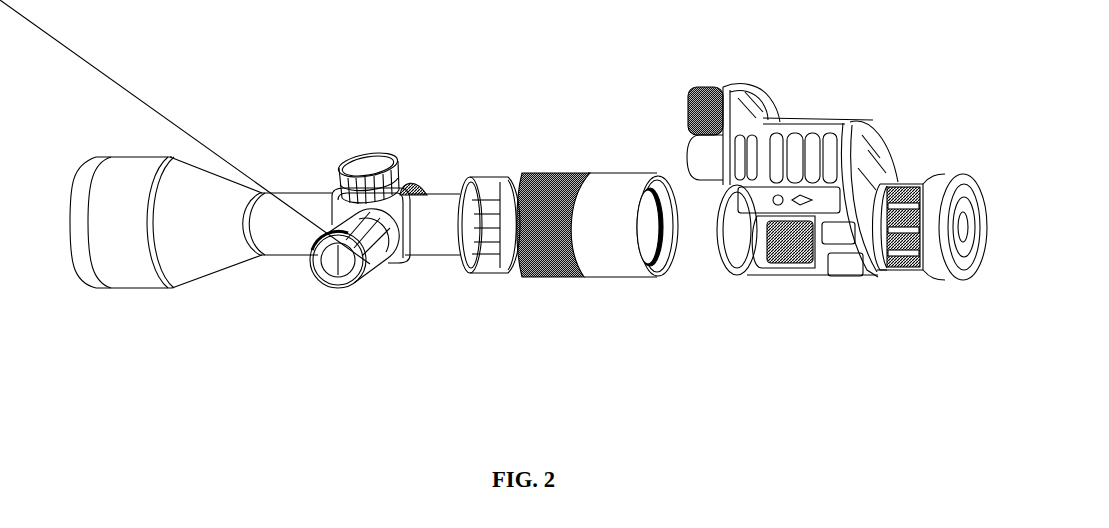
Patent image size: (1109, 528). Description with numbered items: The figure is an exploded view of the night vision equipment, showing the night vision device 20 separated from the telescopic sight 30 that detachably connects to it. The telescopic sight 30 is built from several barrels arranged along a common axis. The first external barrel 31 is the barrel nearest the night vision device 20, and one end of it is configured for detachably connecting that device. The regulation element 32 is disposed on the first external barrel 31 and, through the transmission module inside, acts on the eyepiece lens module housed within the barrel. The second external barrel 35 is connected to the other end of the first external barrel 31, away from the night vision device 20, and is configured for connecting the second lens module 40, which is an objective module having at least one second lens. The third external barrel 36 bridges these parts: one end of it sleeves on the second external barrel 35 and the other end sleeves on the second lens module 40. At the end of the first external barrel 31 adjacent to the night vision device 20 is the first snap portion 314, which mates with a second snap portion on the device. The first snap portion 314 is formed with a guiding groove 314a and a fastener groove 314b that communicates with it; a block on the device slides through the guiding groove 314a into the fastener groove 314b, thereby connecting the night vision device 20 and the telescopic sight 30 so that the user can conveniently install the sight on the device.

The night vision device 20 is at (797, 130).
The telescopic sight 30 is at (416, 138).
The first external barrel 31 is at (705, 296).
The regulation element 32 is at (548, 255).
The second external barrel 35 is at (517, 270).
The third external barrel 36 is at (487, 202).
The second lens module 40 is at (423, 230).
The first snap portion 314 is at (732, 298).
The guiding groove 314a is at (660, 248).
The fastener groove 314b is at (657, 270).